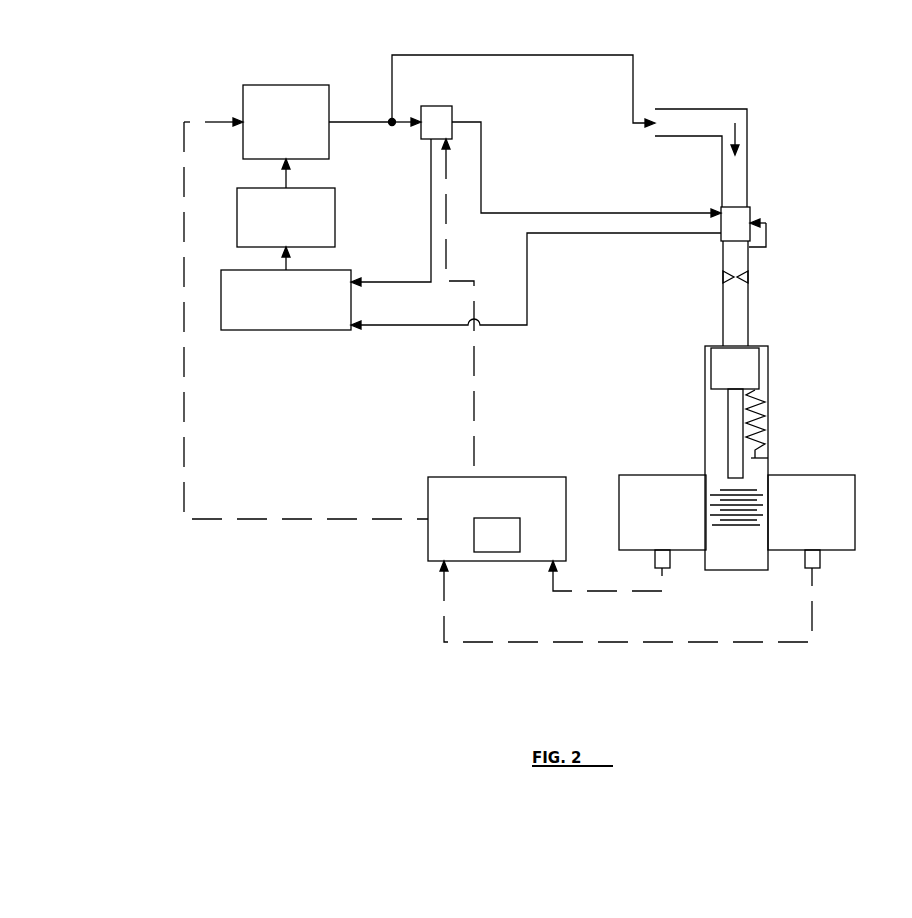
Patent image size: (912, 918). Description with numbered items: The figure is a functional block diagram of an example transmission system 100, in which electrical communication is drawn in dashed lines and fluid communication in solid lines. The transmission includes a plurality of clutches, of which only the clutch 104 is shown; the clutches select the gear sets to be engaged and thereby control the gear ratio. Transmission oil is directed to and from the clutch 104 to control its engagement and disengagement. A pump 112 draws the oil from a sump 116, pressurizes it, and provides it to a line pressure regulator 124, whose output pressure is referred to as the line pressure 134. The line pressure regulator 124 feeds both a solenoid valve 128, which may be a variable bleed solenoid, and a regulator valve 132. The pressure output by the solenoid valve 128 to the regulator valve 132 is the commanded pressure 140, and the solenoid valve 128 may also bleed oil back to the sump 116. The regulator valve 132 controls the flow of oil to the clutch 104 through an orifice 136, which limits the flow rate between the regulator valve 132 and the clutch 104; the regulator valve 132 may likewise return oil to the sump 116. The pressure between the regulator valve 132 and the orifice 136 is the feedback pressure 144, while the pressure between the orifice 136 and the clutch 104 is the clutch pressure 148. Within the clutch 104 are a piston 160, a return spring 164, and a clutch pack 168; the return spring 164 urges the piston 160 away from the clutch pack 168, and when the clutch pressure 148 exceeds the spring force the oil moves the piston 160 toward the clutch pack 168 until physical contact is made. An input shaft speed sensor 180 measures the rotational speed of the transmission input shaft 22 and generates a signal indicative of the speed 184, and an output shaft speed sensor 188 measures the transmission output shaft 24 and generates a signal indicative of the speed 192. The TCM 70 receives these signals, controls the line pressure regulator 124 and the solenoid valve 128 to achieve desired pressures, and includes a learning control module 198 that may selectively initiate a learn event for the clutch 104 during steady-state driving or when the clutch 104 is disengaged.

The transmission system 100 is at (132, 24).
The clutch 104 is at (820, 387).
The pump 112 is at (335, 215).
The sump 116 is at (285, 331).
The line pressure regulator 124 is at (287, 85).
The solenoid valve 128 is at (433, 106).
The regulator valve 132 is at (752, 214).
The line pressure 134 is at (392, 121).
The orifice 136 is at (760, 277).
The commanded pressure 140 is at (482, 135).
The feedback pressure 144 is at (743, 258).
The clutch pressure 148 is at (735, 305).
The piston 160 is at (760, 366).
The return spring 164 is at (758, 420).
The clutch pack 168 is at (720, 500).
The transmission input shaft 22 is at (645, 475).
The transmission output shaft 24 is at (848, 475).
The TCM 70 is at (434, 477).
The input shaft speed sensor 180 is at (662, 576).
The signal indicative of the speed 184 is at (605, 592).
The output shaft speed sensor 188 is at (812, 576).
The signal indicative of the speed 192 is at (752, 645).
The learning control module 198 is at (496, 552).